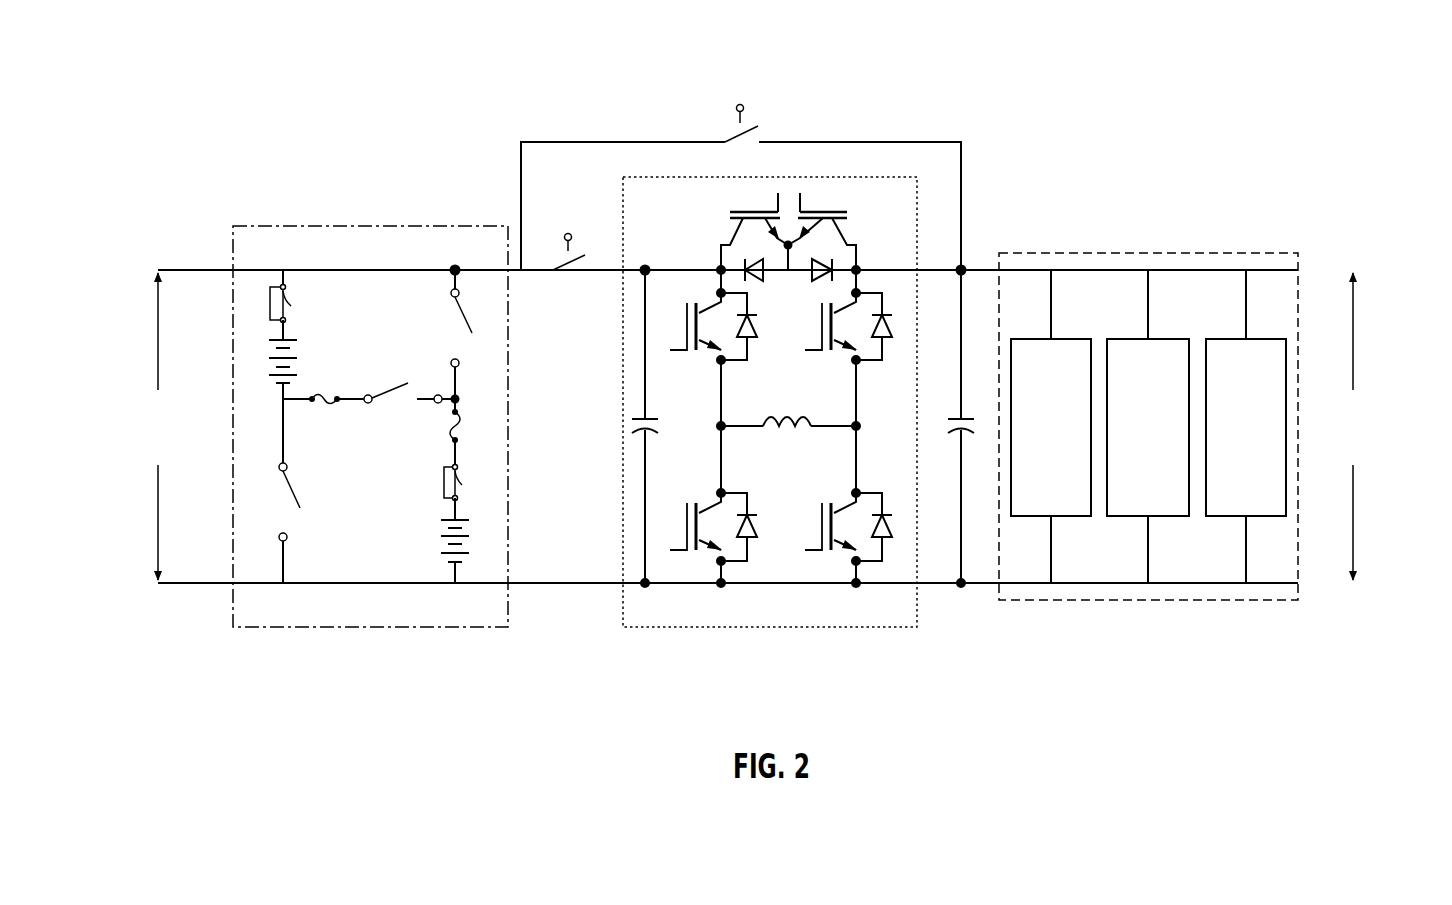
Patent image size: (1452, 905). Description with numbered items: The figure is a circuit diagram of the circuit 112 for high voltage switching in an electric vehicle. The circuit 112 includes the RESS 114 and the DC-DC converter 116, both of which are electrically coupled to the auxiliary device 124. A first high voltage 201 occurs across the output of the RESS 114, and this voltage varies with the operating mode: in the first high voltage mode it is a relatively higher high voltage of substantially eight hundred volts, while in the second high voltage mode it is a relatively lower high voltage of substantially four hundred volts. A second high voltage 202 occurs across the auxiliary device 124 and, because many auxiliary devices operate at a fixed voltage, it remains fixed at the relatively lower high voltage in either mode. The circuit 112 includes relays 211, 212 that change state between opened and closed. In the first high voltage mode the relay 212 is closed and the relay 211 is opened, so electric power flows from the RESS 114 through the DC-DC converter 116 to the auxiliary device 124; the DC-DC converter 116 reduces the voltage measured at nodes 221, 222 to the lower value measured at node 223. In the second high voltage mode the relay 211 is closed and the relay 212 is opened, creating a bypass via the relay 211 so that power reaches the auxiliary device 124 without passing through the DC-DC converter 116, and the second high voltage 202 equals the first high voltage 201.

The circuit 112 is at (288, 60).
The first high voltage 201 is at (152, 378).
The second high voltage 202 is at (1364, 361).
The relay 211 is at (718, 116).
The relay 212 is at (569, 280).
The node 221 is at (454, 267).
The node 222 is at (643, 268).
The node 223 is at (963, 268).
The RESS 114 is at (297, 630).
The DC-DC converter 116 is at (690, 631).
The auxiliary device 124 is at (1205, 601).